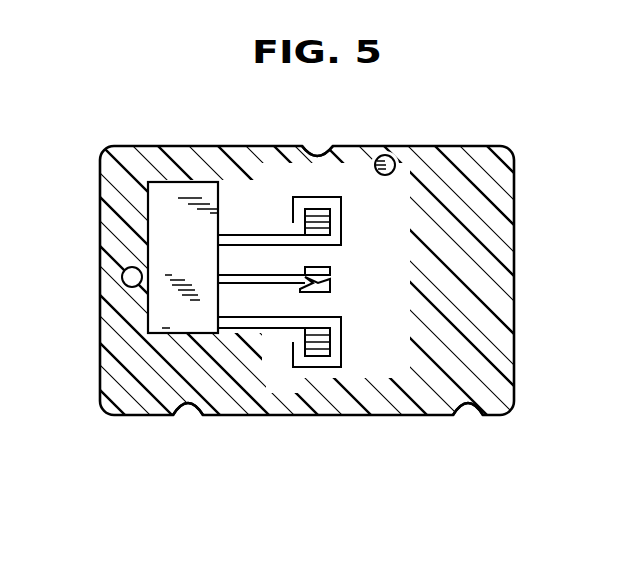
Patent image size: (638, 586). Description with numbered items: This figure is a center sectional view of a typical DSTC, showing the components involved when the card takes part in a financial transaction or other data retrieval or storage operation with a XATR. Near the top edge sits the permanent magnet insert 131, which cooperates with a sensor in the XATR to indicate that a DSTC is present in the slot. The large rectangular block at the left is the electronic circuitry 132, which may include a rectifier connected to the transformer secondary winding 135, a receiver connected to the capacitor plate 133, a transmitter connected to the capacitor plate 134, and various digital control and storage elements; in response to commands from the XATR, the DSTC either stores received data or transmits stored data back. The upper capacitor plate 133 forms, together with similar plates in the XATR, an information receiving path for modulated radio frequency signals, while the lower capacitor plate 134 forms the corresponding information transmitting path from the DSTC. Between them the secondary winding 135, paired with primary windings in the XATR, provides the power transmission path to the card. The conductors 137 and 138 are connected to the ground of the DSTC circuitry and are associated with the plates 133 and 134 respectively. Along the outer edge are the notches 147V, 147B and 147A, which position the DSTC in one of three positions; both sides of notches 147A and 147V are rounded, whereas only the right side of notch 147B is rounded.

The element DSTC is at (193, 140).
The permanent magnet insert 131 is at (390, 156).
The electronic circuitry 132 is at (172, 237).
The capacitor plate 133 is at (330, 221).
The capacitor plate 134 is at (330, 345).
The transformer secondary winding 135 is at (330, 285).
The conductor 137 is at (312, 197).
The conductor 138 is at (318, 367).
The notch 147V is at (318, 150).
The notch 147B is at (186, 410).
The notch 147A is at (466, 410).